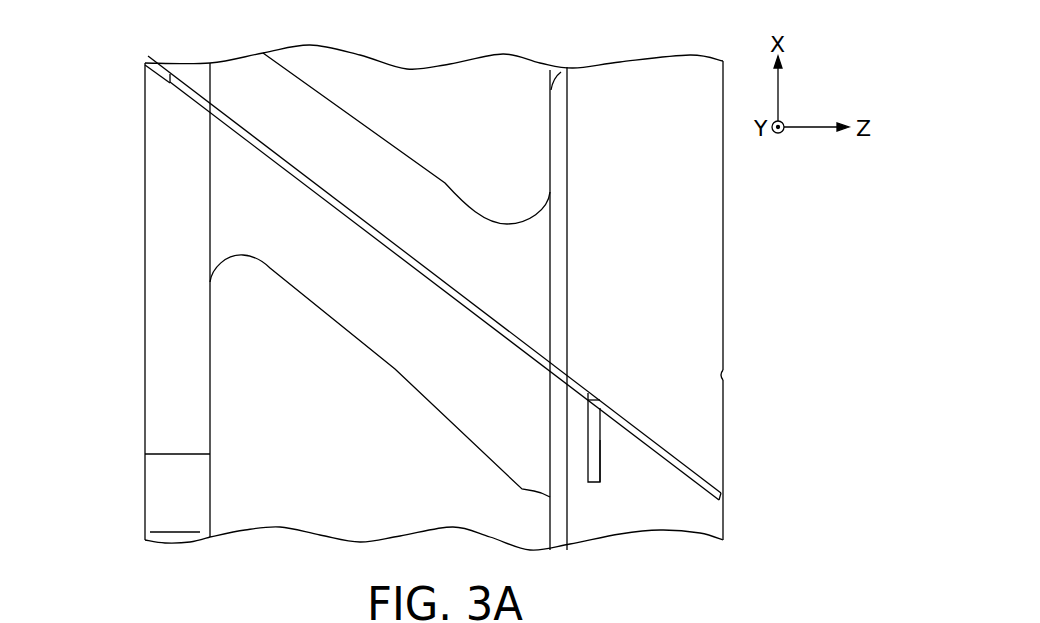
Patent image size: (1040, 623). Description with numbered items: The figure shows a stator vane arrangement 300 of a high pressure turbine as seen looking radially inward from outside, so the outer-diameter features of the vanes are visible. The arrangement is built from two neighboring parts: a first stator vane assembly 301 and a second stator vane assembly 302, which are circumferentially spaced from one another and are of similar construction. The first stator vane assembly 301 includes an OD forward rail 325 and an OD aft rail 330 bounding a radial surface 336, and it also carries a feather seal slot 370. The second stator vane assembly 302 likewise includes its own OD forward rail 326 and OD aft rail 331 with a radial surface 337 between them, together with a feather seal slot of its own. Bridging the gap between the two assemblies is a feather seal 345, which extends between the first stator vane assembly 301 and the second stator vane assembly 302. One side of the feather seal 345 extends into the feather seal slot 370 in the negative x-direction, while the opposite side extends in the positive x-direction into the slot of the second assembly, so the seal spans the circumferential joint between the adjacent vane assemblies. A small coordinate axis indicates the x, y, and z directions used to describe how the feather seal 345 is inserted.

The stator vane arrangement 300 is at (82, 118).
The first stator vane assembly 301 is at (116, 281).
The second stator vane assembly 302 is at (752, 226).
The OD forward rail 325 is at (157, 391).
The OD forward rail 326 is at (152, 65).
The OD aft rail 330 is at (712, 533).
The OD aft rail 331 is at (706, 278).
The radial surface 336 is at (671, 511).
The radial surface 337 is at (665, 320).
The feather seal 345 is at (604, 424).
The feather seal slot 370 is at (600, 449).